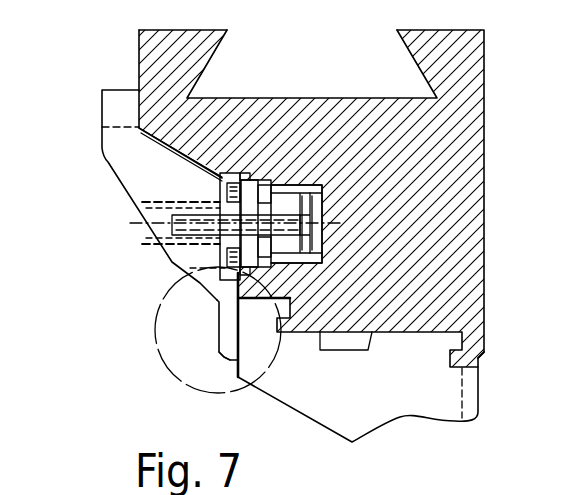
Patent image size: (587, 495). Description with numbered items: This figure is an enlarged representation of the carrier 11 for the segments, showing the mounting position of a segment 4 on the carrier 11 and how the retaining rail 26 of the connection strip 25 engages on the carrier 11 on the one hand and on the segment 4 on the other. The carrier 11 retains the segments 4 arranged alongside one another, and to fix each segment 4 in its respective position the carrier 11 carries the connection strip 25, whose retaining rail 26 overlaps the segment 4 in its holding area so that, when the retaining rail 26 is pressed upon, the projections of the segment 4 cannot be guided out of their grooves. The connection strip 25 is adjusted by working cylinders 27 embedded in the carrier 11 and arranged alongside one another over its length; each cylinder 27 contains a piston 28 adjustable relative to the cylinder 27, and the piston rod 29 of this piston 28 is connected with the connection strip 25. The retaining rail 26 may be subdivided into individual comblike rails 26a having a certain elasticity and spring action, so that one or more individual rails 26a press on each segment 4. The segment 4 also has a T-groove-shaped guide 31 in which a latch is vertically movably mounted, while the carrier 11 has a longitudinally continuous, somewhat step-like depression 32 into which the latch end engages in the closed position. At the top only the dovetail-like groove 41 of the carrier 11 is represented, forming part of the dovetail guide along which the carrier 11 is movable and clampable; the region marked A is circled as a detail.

The segment 4 is at (402, 405).
The carrier 11 is at (453, 190).
The connection strip 25 is at (133, 170).
The retaining rail 26 is at (205, 280).
The individual comblike rail 26a is at (227, 333).
The working cylinder 27 is at (316, 198).
The piston 28 is at (326, 196).
The piston rod 29 is at (182, 232).
The guide 31 is at (467, 398).
The depression 32 is at (478, 355).
The dovetail-like groove 41 is at (203, 73).
The detail A is at (165, 365).